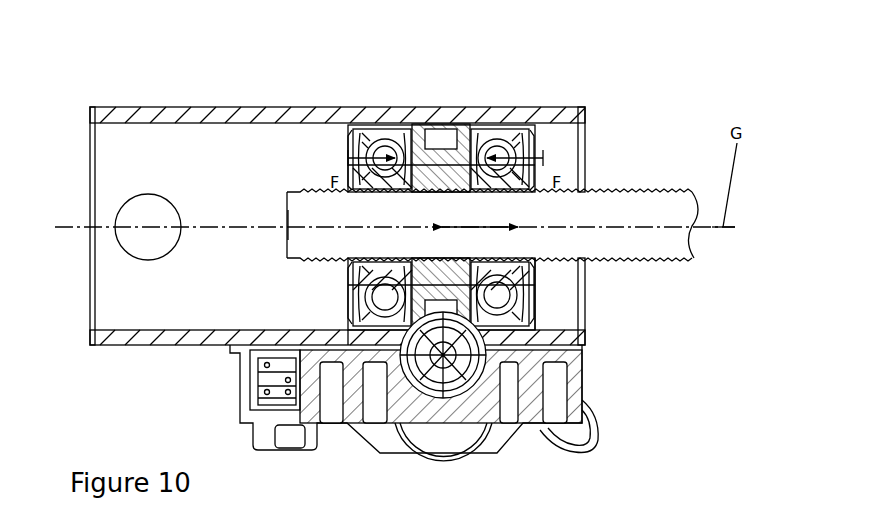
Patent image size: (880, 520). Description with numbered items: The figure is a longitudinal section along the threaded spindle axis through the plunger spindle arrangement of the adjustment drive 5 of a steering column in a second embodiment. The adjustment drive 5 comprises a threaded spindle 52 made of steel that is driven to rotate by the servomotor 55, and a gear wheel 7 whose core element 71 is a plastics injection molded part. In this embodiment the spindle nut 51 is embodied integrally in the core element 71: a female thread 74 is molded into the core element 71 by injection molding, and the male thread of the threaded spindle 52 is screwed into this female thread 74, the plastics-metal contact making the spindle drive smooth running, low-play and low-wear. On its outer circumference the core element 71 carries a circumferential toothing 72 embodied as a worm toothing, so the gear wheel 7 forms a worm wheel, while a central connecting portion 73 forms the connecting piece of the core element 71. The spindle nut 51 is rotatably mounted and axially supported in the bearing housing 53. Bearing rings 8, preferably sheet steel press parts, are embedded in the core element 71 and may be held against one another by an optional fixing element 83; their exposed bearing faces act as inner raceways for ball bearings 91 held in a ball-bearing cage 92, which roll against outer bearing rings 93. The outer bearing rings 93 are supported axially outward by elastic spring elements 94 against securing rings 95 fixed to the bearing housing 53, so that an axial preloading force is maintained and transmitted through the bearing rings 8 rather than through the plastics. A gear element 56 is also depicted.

The adjustment drive 5 is at (650, 52).
The gear wheel 7 is at (338, 269).
The bearing rings 8 is at (410, 123).
The spindle nut 51 is at (392, 257).
The threaded spindle 52 is at (665, 205).
The bearing housing 53 is at (252, 113).
The servomotor 55 is at (492, 438).
The gear wheel 56 is at (437, 390).
The core element 71 is at (540, 272).
The toothing 72 is at (447, 125).
The connecting portion 73 is at (443, 459).
The female thread 74 is at (343, 292).
The fixing element 83 is at (557, 442).
The ball bearings 91 is at (498, 122).
The ball-bearing cage 92 is at (345, 340).
The outer bearing rings 93 is at (372, 124).
The spring elements 94 is at (362, 125).
The securing rings 95 is at (438, 186).